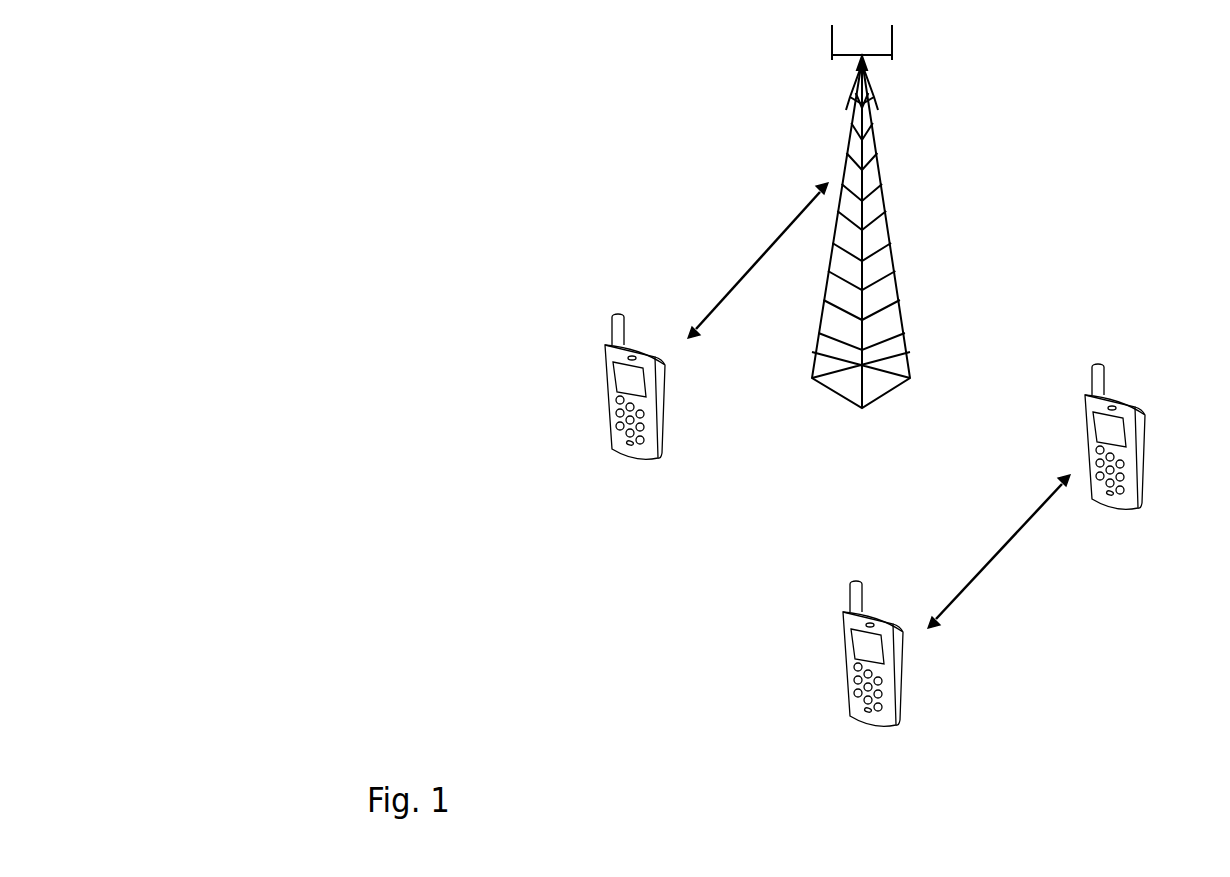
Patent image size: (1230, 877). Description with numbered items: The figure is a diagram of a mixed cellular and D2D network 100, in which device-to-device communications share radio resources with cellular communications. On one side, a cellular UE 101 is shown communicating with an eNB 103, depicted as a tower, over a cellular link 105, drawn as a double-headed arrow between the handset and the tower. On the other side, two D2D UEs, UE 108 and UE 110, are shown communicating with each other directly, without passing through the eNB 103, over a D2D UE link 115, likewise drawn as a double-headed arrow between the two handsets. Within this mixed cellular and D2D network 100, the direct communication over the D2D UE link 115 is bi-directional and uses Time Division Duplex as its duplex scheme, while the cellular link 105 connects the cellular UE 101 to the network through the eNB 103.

The mixed cellular and D2D network 100 is at (485, 138).
The UE 101 is at (640, 460).
The eNB 103 is at (878, 162).
The cellular link 105 is at (748, 268).
The UE 108 is at (1125, 398).
The UE 110 is at (910, 675).
The D2D UE link 115 is at (990, 568).